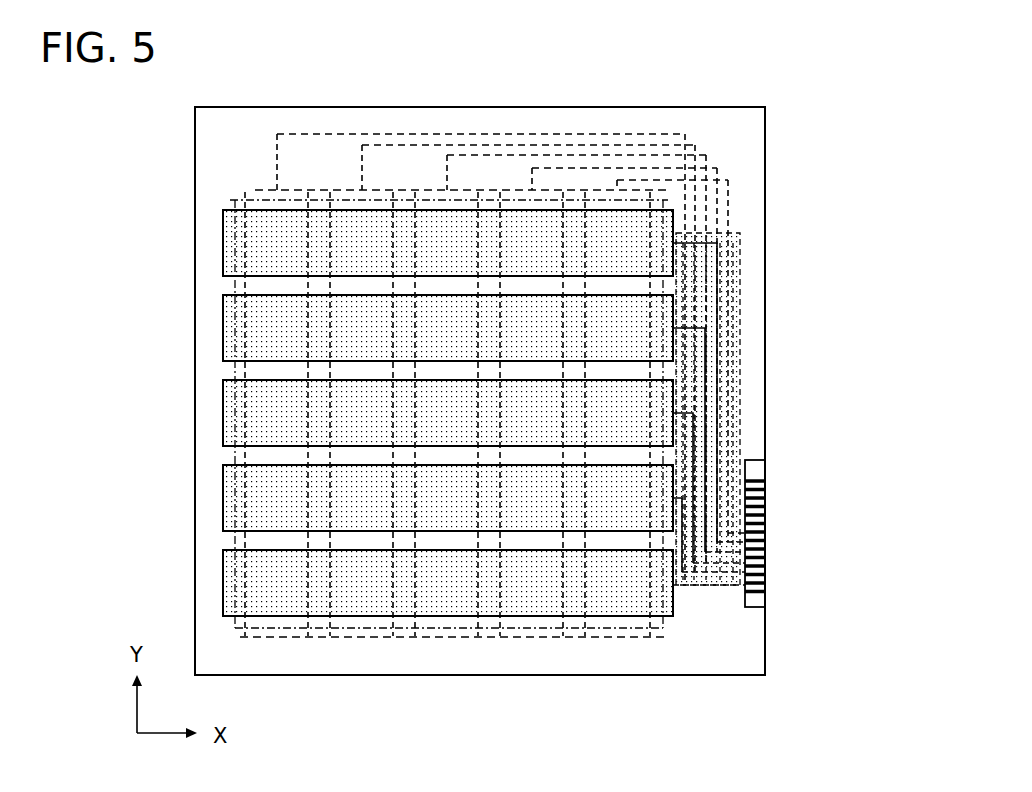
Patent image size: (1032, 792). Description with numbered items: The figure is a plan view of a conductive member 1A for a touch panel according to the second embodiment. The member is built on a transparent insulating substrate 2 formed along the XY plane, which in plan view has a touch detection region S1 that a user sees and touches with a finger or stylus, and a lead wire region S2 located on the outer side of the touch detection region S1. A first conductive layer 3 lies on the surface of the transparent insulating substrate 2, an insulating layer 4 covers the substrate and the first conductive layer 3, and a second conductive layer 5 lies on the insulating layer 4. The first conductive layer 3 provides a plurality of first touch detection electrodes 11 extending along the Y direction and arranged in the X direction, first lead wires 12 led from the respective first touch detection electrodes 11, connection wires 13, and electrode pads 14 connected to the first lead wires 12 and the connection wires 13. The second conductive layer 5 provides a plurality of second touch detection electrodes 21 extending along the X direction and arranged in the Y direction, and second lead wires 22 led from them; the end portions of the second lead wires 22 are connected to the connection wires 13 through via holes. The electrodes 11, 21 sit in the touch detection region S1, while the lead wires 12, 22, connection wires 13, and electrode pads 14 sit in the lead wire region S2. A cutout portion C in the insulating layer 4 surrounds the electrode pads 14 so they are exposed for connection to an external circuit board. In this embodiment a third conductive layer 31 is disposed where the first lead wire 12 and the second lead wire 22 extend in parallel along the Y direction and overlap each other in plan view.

The conductive member for a touch panel 1A is at (772, 80).
The transparent insulating substrate 2 is at (195, 492).
The first conductive layer 3 is at (445, 112).
The insulating layer 4 is at (742, 413).
The second conductive layer 5 is at (224, 542).
The first touch detection electrode 11 is at (262, 190).
The first lead wire 12 is at (330, 133).
The connection wire 13 is at (718, 586).
The electrode pad 14 is at (740, 483).
The second touch detection electrode 21 is at (230, 243).
The second lead wire 22 is at (740, 305).
The third conductive layer 31 is at (740, 248).
The touch detection region S1 is at (230, 200).
The lead wire region S2 is at (207, 405).
The cutout portion C is at (755, 608).